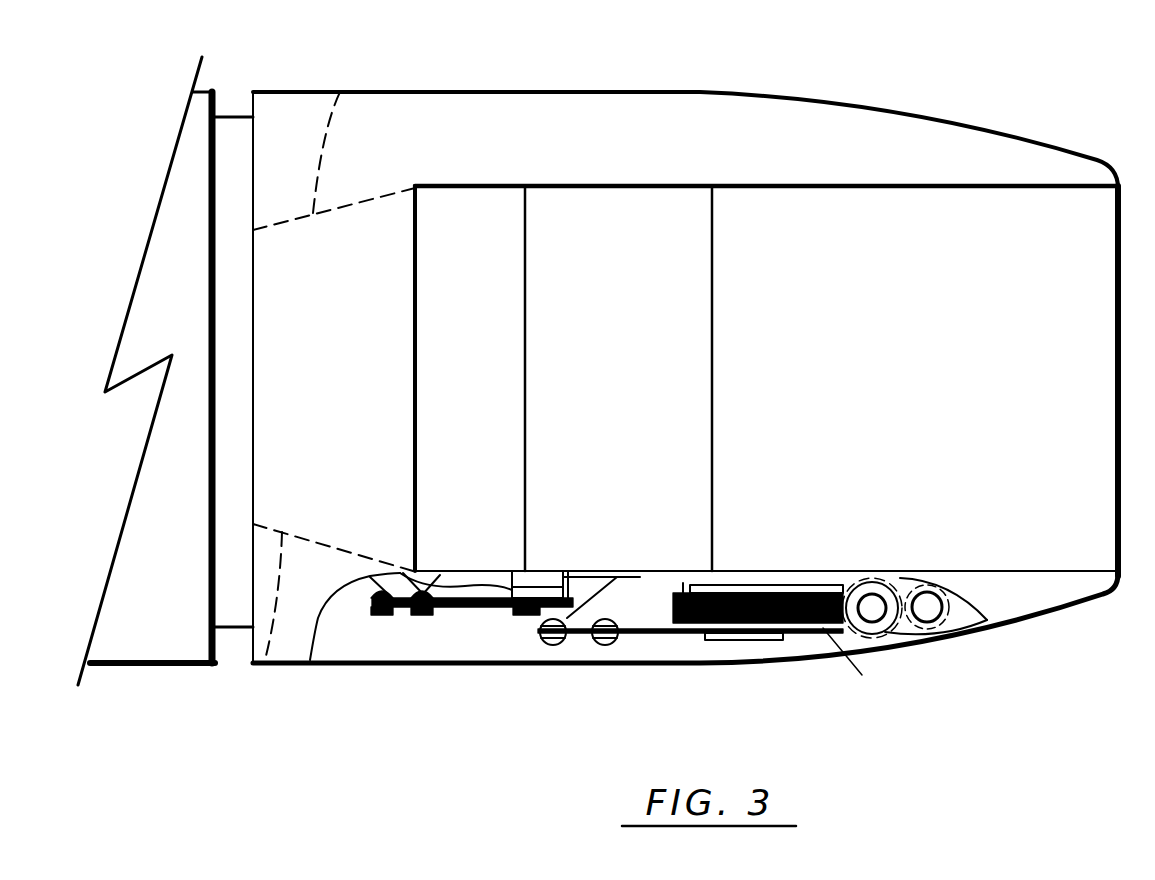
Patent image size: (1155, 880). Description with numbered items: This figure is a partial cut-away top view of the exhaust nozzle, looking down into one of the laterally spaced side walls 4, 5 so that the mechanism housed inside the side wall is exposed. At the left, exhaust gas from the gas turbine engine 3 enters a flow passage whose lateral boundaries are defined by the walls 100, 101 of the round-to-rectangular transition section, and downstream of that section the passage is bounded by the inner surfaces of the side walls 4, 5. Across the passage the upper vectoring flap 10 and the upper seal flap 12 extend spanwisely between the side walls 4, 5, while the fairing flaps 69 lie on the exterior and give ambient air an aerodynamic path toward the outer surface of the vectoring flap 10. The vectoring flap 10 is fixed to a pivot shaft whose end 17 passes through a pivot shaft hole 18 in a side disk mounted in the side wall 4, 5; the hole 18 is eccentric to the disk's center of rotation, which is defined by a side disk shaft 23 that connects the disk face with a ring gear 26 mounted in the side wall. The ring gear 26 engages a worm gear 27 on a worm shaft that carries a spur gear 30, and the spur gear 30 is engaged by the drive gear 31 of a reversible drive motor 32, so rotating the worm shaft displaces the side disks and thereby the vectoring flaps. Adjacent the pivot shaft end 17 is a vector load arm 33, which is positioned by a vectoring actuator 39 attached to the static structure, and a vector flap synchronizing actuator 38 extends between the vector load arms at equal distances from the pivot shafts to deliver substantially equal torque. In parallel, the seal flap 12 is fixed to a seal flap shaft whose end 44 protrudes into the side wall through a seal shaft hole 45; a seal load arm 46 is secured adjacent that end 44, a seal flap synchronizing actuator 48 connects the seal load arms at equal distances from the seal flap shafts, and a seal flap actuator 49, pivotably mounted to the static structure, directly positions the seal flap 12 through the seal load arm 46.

The gas turbine engine 3 is at (181, 305).
The side wall 4 is at (1063, 590).
The side wall 5 is at (877, 133).
The vectoring flap 10 is at (916, 309).
The seal flap 12 is at (630, 309).
The fairing flaps 69 is at (478, 309).
The wall of round-to-rectangular transition section 100 is at (340, 92).
The wall of round-to-rectangular transition section 101 is at (265, 660).
The pivot shaft end 17 is at (753, 643).
The pivot shaft hole 18 is at (793, 585).
The side disk shaft 23 is at (683, 583).
The ring gear 26 is at (840, 660).
The worm gear 27 is at (872, 608).
The spur gear 30 is at (953, 537).
The drive gear 31 is at (973, 620).
The reversible drive motor 32 is at (950, 608).
The vector load arm 33 is at (663, 640).
The vector flap synchronizing actuator 38 is at (603, 645).
The vectoring actuator 39 is at (553, 647).
The seal flap shaft end 44 is at (400, 573).
The seal shaft hole 45 is at (443, 572).
The seal load arm 46 is at (482, 612).
The seal flap synchronizing actuator 48 is at (382, 615).
The seal flap actuator 49 is at (420, 615).